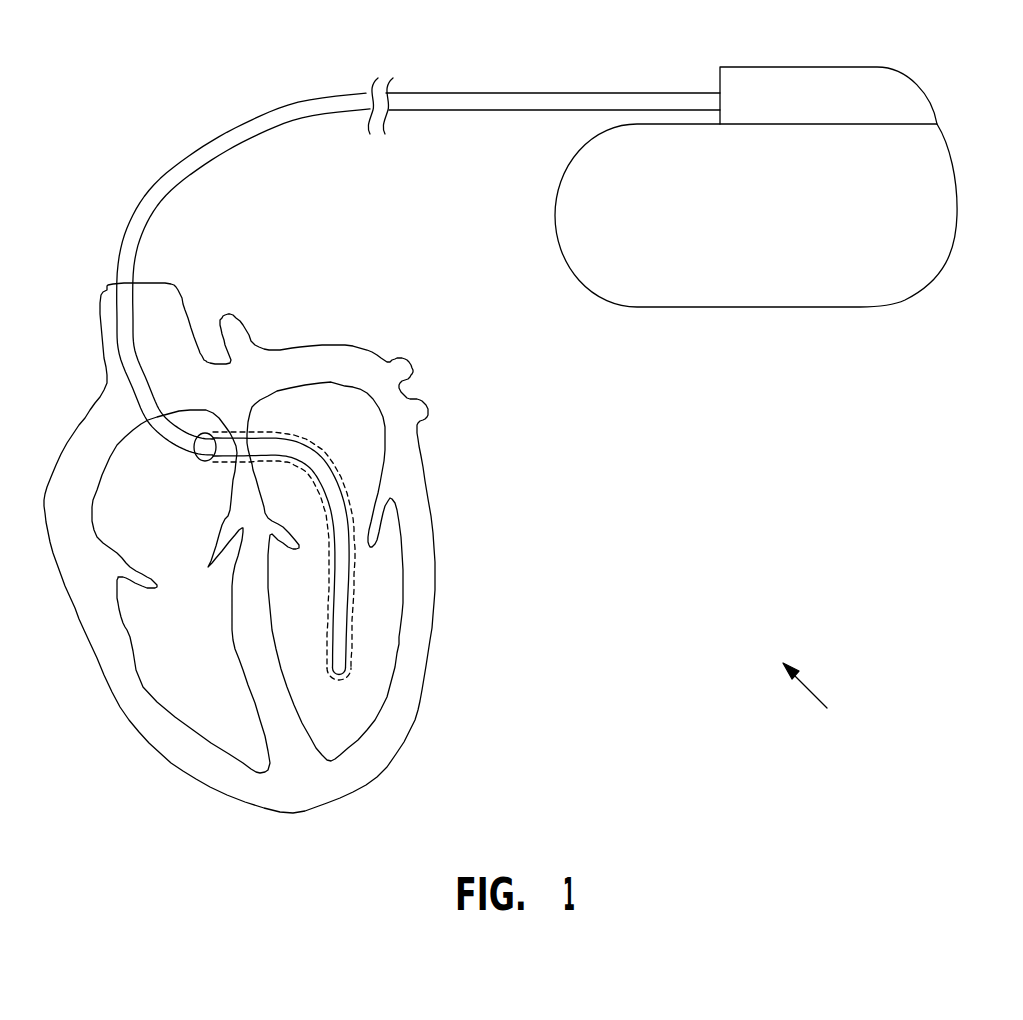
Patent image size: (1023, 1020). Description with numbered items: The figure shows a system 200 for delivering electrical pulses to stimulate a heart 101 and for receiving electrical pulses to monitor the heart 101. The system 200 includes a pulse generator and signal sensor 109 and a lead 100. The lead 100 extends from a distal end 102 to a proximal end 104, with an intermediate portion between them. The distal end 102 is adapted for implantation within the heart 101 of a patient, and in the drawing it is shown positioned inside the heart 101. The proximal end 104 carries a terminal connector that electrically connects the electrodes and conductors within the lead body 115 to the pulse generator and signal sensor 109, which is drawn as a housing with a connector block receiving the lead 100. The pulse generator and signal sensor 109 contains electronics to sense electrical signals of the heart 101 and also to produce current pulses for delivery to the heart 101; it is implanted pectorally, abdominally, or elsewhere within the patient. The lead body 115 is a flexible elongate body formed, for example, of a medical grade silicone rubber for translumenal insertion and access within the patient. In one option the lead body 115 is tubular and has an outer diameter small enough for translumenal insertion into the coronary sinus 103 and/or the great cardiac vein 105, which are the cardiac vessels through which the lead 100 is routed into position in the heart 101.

The lead 100 is at (233, 129).
The heart 101 is at (120, 708).
The distal end 102 is at (347, 663).
The coronary sinus 103 is at (197, 460).
The proximal end 104 is at (674, 95).
The great cardiac vein 105 is at (357, 612).
The pulse generator and signal sensor 109 is at (958, 205).
The lead body 115 is at (147, 189).
The system 200 is at (818, 701).